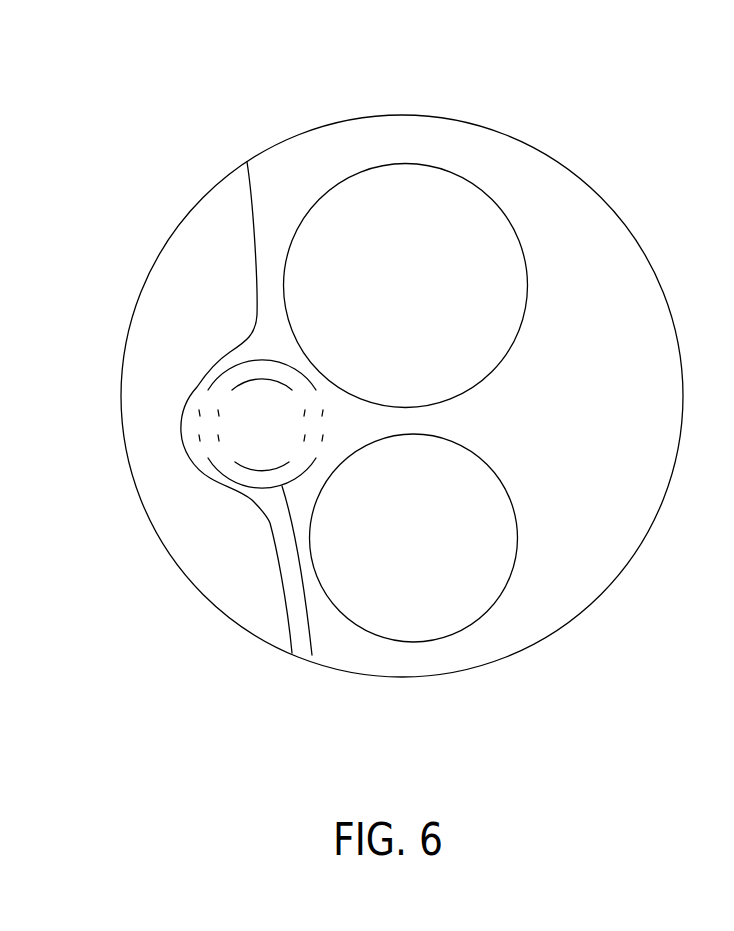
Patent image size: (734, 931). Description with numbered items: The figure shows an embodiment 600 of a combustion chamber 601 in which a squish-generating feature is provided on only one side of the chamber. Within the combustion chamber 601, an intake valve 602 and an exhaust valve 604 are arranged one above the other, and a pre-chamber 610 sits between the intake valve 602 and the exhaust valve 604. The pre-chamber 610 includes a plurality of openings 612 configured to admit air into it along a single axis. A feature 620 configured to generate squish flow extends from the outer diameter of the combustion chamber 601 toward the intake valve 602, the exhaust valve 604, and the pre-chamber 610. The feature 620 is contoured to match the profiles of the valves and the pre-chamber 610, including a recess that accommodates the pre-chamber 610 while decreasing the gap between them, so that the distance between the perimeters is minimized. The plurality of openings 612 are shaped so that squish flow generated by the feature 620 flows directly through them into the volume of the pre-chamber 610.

The embodiment 600 is at (648, 88).
The combustion chamber 601 is at (545, 420).
The intake valve 602 is at (416, 296).
The exhaust valve 604 is at (422, 559).
The pre-chamber 610 is at (312, 655).
The plurality of openings 612 is at (207, 460).
The feature 620 is at (197, 331).